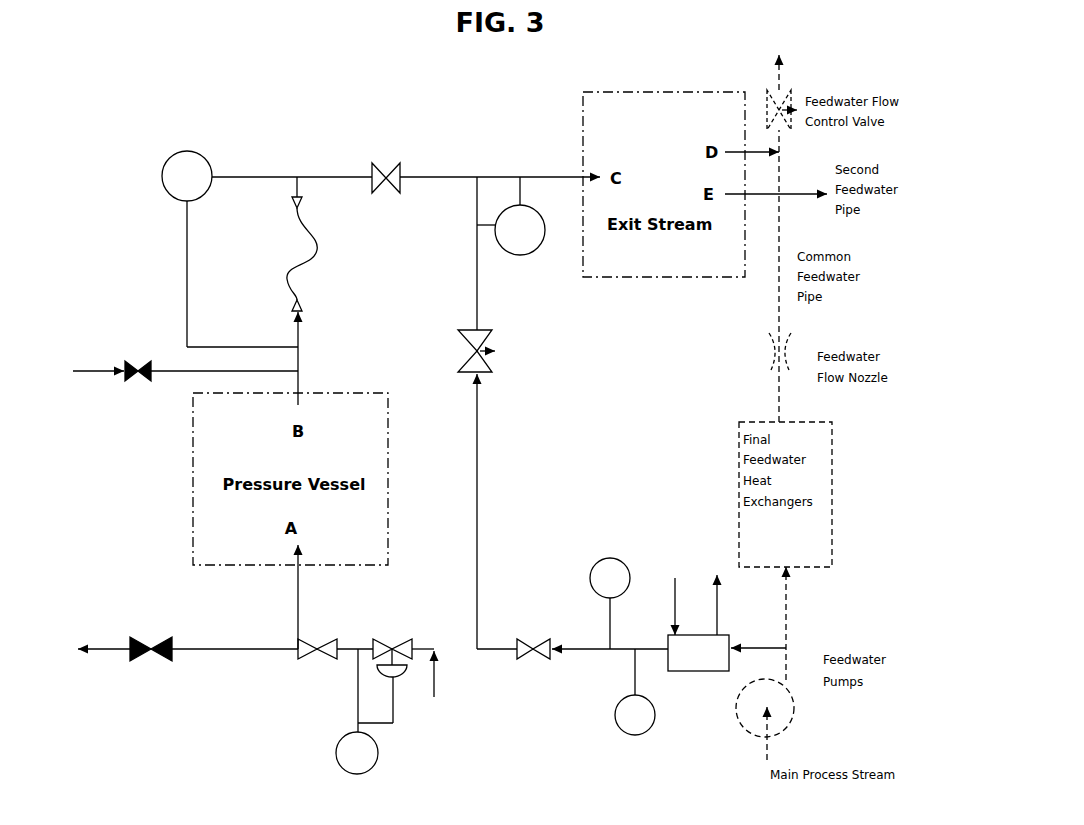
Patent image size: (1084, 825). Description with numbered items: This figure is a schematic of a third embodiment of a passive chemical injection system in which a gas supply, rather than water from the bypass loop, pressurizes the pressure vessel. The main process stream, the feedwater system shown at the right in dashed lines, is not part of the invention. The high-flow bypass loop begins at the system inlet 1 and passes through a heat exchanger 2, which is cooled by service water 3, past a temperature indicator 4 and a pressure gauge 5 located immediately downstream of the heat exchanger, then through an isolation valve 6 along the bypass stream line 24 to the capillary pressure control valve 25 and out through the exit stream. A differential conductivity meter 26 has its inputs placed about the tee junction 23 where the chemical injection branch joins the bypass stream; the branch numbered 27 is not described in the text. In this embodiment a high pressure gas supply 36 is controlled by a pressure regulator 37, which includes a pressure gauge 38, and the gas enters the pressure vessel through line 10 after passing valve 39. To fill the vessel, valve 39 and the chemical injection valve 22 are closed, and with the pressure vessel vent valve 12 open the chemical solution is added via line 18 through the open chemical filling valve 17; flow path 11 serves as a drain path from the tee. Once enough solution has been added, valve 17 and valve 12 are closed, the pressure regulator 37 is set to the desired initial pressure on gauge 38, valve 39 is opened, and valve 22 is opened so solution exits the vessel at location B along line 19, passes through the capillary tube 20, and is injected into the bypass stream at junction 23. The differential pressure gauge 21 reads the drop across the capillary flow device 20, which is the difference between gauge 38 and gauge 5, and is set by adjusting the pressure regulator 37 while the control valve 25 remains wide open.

The system inlet 1 is at (770, 644).
The heat exchanger 2 is at (698, 653).
The service water 3 is at (696, 605).
The temperature indicator 4 is at (650, 731).
The pressure gauge 5 is at (619, 557).
The isolation valve 6 is at (549, 661).
The line 10 is at (303, 609).
The flow path 11 is at (225, 646).
The pressure vessel vent valve 12 is at (173, 661).
The chemical filling valve 17 is at (122, 383).
The chemical source line 18 is at (103, 360).
The chemical injection branch line 19 is at (305, 372).
The capillary tube 20 is at (290, 277).
The differential pressure gauge 21 is at (180, 155).
The isolation valve 22 is at (371, 161).
The junction 23 is at (475, 172).
The bypass stream line 24 is at (483, 452).
The capillary pressure control valve 25 is at (496, 372).
The differential conductivity meter 26 is at (538, 252).
The conductivity meter line 27 is at (533, 172).
The high pressure gas supply 36 is at (437, 697).
The pressure regulator 37 is at (405, 639).
The pressure gauge 38 is at (380, 761).
The high pressure gas supply valve 39 is at (300, 661).